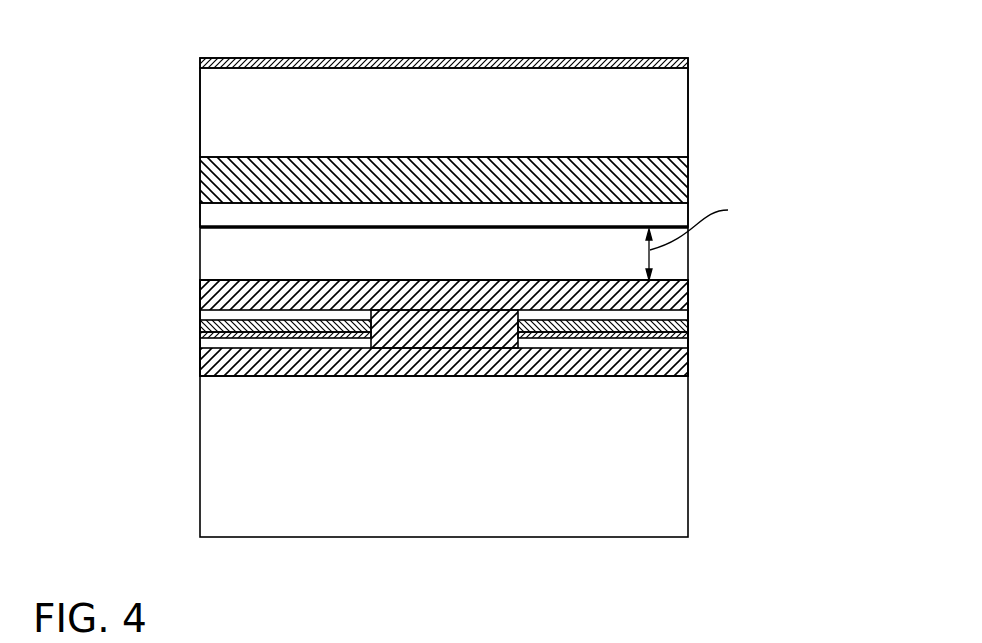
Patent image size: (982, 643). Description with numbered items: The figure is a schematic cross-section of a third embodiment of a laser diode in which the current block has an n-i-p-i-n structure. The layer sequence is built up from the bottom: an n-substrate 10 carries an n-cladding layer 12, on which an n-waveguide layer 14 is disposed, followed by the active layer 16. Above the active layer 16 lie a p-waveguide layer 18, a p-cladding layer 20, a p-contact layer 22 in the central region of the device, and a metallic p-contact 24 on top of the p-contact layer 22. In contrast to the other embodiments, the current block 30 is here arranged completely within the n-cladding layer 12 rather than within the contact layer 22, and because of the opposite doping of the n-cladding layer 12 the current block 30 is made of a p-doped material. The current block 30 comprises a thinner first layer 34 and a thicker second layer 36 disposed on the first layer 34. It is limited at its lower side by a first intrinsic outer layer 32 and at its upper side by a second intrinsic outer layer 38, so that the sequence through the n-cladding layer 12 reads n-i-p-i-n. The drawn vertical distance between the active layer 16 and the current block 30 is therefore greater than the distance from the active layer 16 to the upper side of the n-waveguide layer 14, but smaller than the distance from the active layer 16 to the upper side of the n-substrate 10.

The n-substrate 10 is at (670, 480).
The n-cladding layer 12 is at (235, 363).
The n-waveguide layer 14 is at (672, 258).
The active layer 16 is at (200, 229).
The p-waveguide layer 18 is at (210, 212).
The p-cladding layer 20 is at (237, 194).
The p-contact layer 22 is at (247, 101).
The metallic p-contact 24 is at (217, 64).
The current block 30 is at (781, 275).
The first intrinsic outer layer 32 is at (672, 342).
The first layer 34 is at (673, 332).
The second layer 36 is at (675, 317).
The second intrinsic outer layer 38 is at (688, 313).